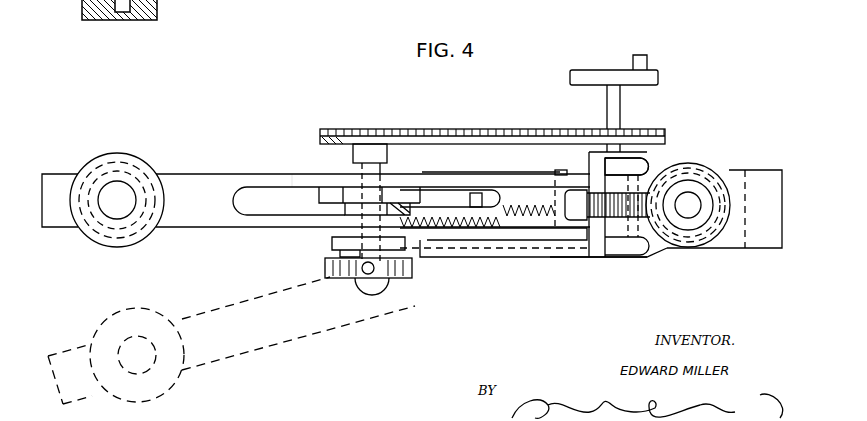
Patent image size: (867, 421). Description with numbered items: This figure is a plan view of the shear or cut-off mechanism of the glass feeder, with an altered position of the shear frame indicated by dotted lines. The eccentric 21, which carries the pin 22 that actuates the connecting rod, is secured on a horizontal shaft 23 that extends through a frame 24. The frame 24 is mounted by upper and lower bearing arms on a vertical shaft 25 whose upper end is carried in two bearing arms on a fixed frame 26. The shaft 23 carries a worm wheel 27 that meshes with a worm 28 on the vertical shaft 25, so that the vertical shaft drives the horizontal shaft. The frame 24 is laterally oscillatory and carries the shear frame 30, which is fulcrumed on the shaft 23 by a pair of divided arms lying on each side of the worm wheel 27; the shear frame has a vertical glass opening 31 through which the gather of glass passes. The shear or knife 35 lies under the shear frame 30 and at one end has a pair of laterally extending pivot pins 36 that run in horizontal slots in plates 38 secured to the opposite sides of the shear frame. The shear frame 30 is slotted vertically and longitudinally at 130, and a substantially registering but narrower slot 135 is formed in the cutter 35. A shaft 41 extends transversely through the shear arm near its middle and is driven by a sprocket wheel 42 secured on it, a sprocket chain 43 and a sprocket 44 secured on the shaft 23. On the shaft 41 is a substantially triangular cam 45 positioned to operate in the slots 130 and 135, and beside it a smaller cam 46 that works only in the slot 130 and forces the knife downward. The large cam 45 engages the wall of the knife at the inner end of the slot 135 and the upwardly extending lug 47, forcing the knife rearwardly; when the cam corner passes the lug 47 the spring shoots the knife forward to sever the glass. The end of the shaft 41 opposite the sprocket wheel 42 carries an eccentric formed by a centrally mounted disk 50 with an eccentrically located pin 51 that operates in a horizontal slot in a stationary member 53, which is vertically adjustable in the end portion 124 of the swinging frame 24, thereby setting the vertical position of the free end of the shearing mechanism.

The eccentric 21 is at (580, 73).
The pin 22 is at (647, 63).
The shaft 23 is at (613, 112).
The frame 24 is at (580, 262).
The vertical shaft 25 is at (690, 213).
The frame 26 is at (648, 182).
The worm wheel 27 is at (700, 165).
The worm 28 is at (762, 177).
The shear frame 30 is at (533, 187).
The glass opening 31 is at (128, 192).
The shear 35 is at (262, 198).
The pivot pins 36 is at (560, 241).
The plates 38 is at (503, 240).
The shaft 41 is at (383, 168).
The sprocket wheel 42 is at (383, 130).
The sprocket chain 43 is at (458, 133).
The sprocket 44 is at (655, 140).
The cam 45 is at (448, 198).
The cam 46 is at (427, 235).
The lug 47 is at (482, 203).
The disk 50 is at (330, 243).
The pin 51 is at (328, 262).
The stationary frame 53 is at (327, 280).
The end portion 124 is at (375, 290).
The slot 130 is at (292, 188).
The slot 135 is at (337, 197).